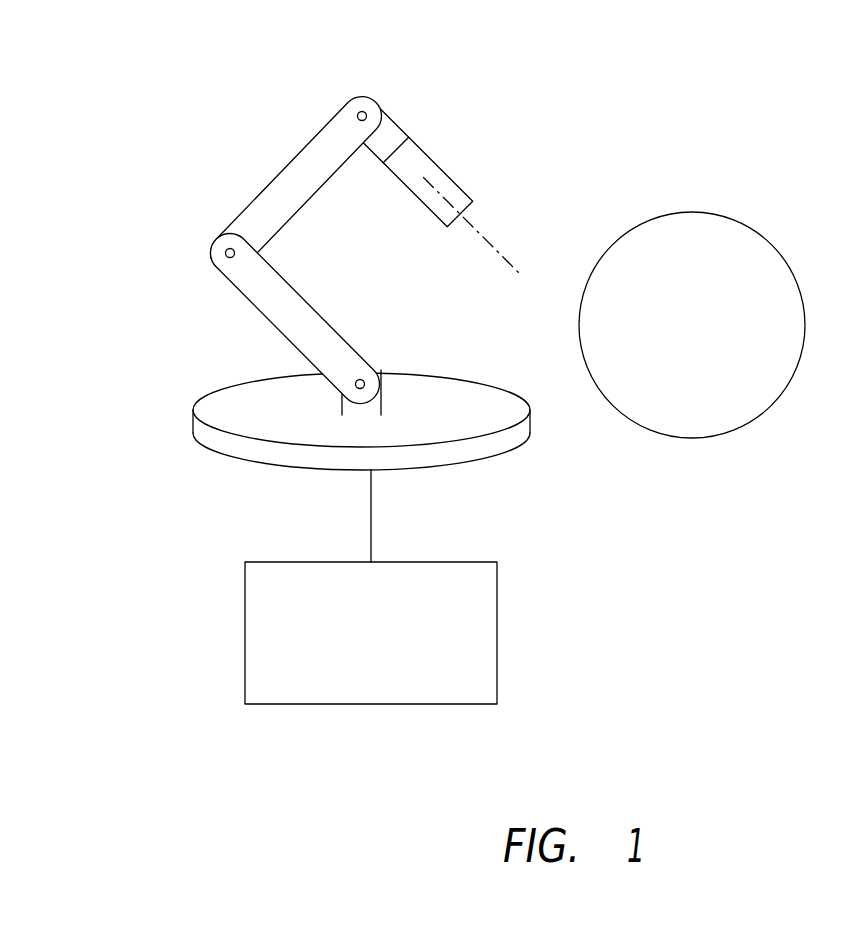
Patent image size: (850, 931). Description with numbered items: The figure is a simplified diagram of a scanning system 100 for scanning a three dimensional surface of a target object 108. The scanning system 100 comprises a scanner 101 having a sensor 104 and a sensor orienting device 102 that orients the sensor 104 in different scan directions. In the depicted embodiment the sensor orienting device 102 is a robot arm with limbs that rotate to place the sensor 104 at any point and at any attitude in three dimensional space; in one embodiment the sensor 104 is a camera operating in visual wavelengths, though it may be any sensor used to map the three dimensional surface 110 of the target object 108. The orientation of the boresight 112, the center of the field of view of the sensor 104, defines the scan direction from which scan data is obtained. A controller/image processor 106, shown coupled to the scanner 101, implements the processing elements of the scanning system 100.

The scanning system 100 is at (561, 128).
The scanner 101 is at (140, 90).
The sensor orienting device 102 is at (238, 188).
The sensor 104 is at (448, 180).
The controller/image processor 106 is at (497, 631).
The target object 108 is at (777, 250).
The 3D surface 110 is at (622, 278).
The boresight 112 is at (485, 236).